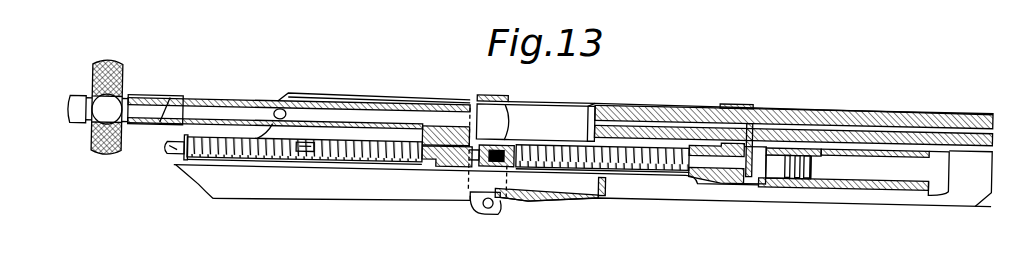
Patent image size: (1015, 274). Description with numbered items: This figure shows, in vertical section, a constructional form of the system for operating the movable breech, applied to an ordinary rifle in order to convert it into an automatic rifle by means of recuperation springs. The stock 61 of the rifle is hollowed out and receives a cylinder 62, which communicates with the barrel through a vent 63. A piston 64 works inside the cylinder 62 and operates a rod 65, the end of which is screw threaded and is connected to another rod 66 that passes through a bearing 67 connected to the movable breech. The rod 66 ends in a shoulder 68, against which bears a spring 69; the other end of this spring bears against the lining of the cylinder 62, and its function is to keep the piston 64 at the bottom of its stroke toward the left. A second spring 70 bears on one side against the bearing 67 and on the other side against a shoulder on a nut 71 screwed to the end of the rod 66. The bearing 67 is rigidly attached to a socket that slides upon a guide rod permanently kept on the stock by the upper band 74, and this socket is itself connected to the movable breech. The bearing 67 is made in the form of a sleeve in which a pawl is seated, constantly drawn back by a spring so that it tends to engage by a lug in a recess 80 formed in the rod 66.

The stock 61 is at (918, 184).
The cylinder 62 is at (790, 180).
The vent 63 is at (749, 136).
The piston 64 is at (810, 158).
The rod 65 is at (657, 156).
The rod 66 is at (392, 160).
The bearing 67 is at (447, 131).
The shoulder 68 is at (508, 147).
The spring 69 is at (618, 167).
The second spring 70 is at (365, 160).
The nut 71 is at (172, 153).
The upper band 74 is at (503, 98).
The recess 80 is at (317, 154).